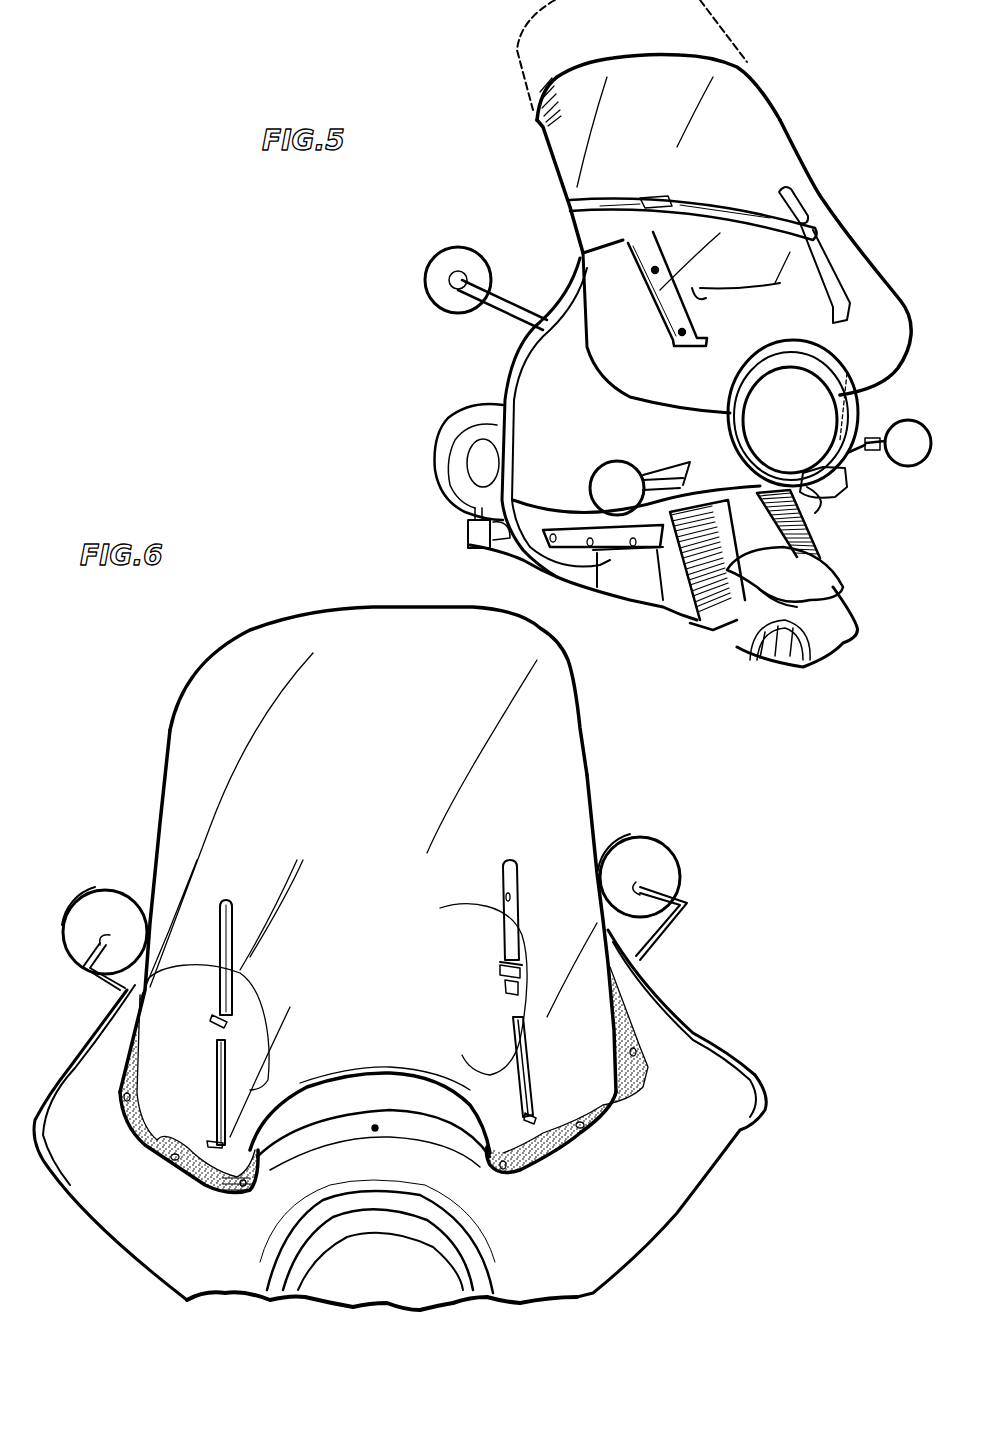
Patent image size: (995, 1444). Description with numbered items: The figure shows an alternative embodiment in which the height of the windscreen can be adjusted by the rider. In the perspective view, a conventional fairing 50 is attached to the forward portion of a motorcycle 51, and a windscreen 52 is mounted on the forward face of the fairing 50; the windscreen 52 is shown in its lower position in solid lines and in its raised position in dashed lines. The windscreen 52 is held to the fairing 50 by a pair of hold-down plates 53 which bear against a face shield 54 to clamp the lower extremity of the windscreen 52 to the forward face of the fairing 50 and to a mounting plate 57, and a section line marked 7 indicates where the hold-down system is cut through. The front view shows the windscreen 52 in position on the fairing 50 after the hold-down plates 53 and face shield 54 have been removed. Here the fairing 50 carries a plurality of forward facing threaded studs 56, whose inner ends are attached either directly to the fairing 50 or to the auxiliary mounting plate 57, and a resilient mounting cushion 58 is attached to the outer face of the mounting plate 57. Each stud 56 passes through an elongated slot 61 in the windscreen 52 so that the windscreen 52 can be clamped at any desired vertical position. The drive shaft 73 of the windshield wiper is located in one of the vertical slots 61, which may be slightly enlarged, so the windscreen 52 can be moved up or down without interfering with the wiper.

In FIG. 5, the section line 7- 7 is at (735, 208).
In FIG. 5, the fairing 50 is at (537, 367).
In FIG. 6, the fairing 50 is at (700, 1070).
In FIG. 5, the motorcycle 51 is at (457, 427).
In FIG. 5, the windscreen 52 is at (757, 112).
In FIG. 6, the windscreen 52 is at (560, 712).
In FIG. 5, the hold-down plates 53 is at (710, 303).
In FIG. 5, the face shield 54 is at (629, 363).
In FIG. 6, the threaded studs 56 is at (207, 1143).
In FIG. 6, the mounting plate 57 is at (257, 1185).
In FIG. 6, the resilient mounting cushion 58 is at (140, 1147).
In FIG. 6, the elongated slot 61 is at (507, 897).
In FIG. 6, the drive shaft 73 is at (520, 997).